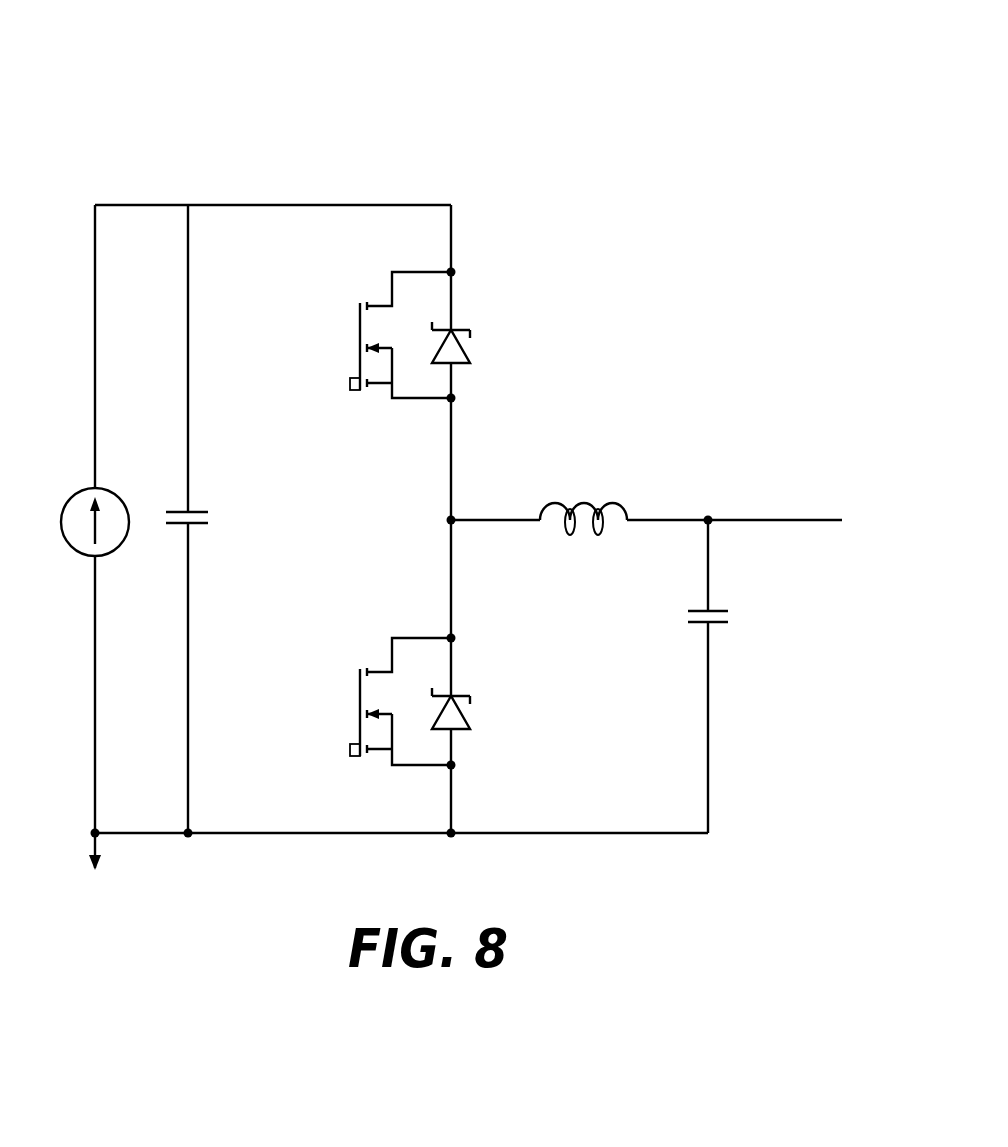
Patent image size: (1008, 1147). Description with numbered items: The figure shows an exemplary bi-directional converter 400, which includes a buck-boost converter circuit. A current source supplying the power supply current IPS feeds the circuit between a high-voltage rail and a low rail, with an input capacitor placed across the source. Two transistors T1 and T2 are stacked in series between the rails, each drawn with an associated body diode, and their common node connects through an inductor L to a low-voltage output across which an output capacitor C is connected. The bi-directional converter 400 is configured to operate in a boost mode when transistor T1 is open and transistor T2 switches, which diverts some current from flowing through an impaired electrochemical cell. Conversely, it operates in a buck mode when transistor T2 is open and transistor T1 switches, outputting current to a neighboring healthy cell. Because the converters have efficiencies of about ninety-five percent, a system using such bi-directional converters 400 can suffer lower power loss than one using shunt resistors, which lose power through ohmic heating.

The bi-directional converter 400 is at (104, 86).
The transistor T1 is at (397, 335).
The transistor T2 is at (397, 701).
The inductor L is at (583, 504).
The output capacitor C is at (708, 676).
The power supply current IPS is at (73, 537).